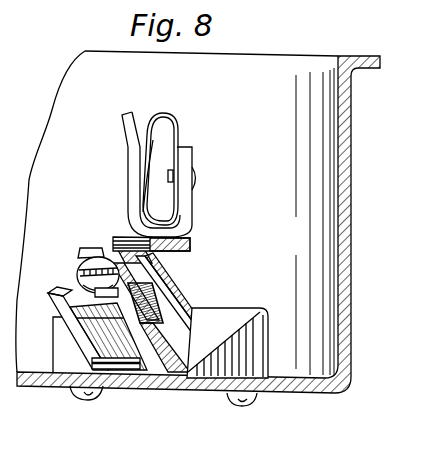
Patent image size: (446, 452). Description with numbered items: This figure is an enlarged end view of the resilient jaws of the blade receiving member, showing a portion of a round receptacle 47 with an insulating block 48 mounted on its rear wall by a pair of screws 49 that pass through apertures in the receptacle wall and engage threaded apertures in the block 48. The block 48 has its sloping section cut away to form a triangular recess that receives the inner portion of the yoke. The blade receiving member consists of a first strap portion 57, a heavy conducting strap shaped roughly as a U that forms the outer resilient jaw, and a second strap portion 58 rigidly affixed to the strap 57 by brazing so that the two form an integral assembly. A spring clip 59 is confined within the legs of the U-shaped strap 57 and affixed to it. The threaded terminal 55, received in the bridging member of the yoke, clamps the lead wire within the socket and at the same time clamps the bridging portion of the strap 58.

The round receptacle 47 is at (346, 291).
The insulating block 48 is at (273, 336).
The screws 49 is at (233, 398).
The threaded terminal 55 is at (88, 273).
The first strap portion 57 is at (118, 125).
The second strap portion 58 is at (188, 243).
The spring clip 59 is at (178, 120).